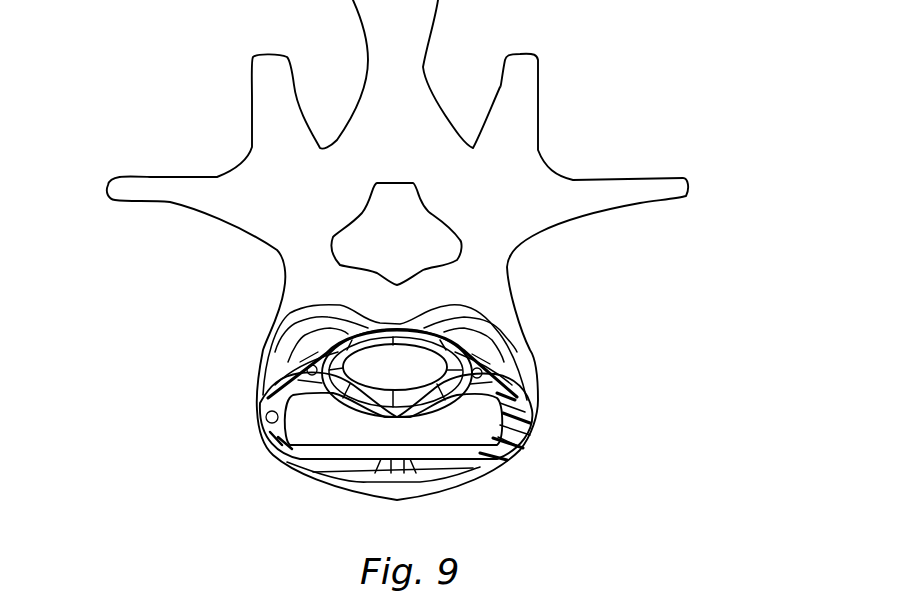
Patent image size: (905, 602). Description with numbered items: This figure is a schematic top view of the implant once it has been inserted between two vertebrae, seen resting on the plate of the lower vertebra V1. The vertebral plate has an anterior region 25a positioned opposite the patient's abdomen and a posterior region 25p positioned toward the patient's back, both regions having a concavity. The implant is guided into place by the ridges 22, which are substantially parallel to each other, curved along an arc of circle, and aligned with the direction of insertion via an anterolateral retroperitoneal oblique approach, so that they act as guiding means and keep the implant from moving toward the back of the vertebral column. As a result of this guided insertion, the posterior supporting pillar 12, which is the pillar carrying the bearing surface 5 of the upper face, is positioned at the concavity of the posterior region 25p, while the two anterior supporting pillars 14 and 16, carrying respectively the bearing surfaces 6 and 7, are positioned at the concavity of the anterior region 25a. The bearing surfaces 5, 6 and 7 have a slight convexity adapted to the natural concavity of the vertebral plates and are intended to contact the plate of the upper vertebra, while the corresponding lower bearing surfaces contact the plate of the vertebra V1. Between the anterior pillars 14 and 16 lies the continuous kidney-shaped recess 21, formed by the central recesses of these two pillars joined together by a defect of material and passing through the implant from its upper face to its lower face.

The lower vertebra V1 is at (152, 230).
The supporting pillar 12 is at (373, 333).
The bearing surface 5 is at (325, 336).
The supporting pillar 14 is at (266, 400).
The bearing surface 6 is at (265, 437).
The anterior region of the vertebral plate 25a is at (363, 433).
The posterior region of the vertebral plate 25p is at (457, 330).
The kidney-shaped recess 21 is at (407, 447).
The supporting pillar 16 is at (512, 402).
The bearing surface 7 is at (513, 425).
The ridges 22 is at (490, 473).